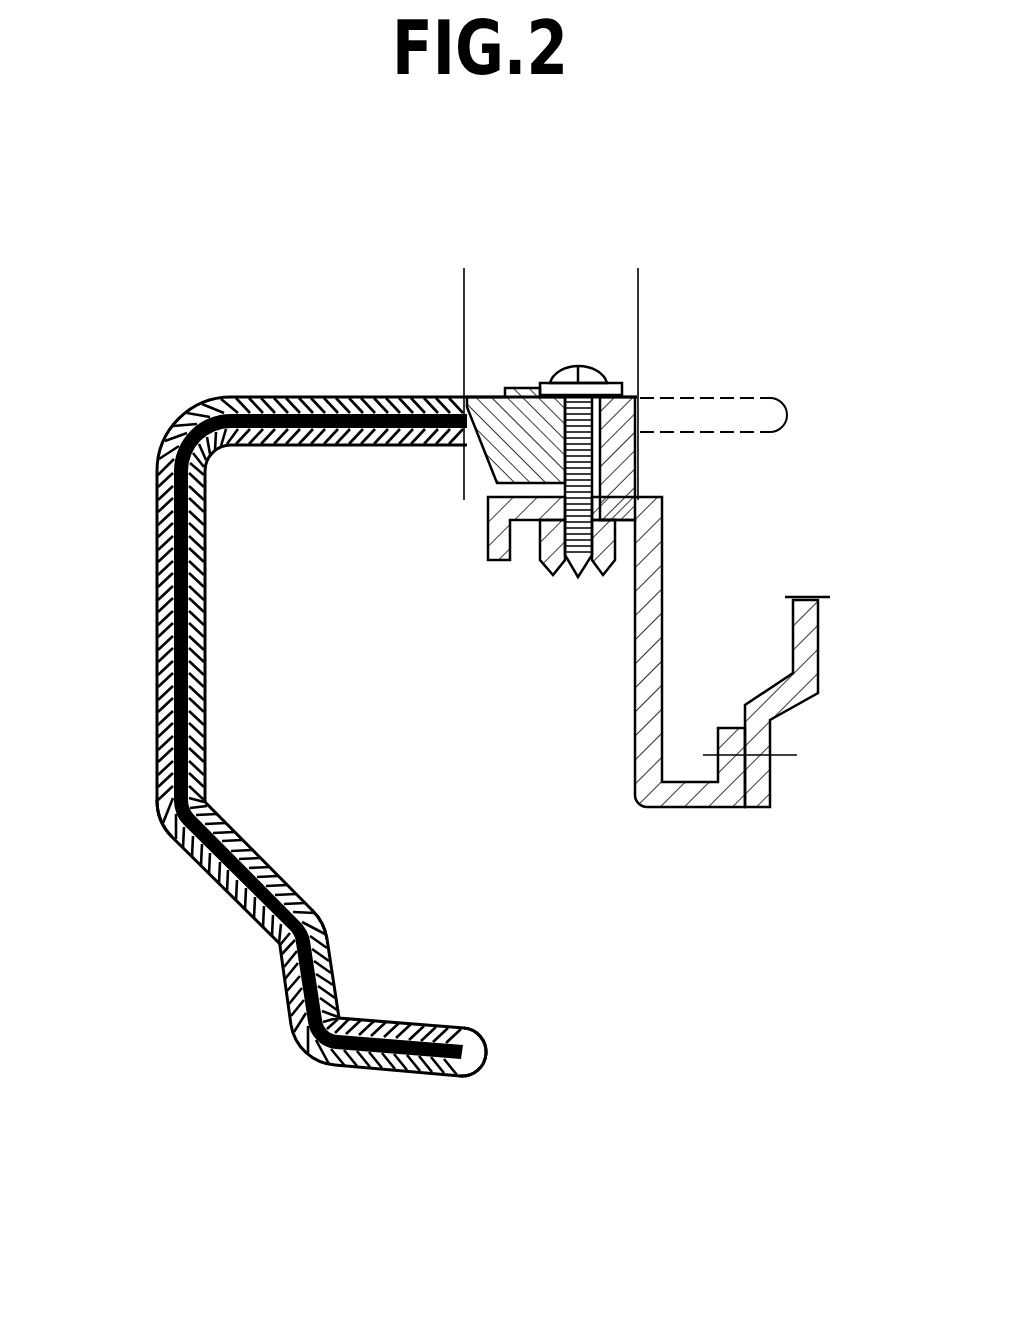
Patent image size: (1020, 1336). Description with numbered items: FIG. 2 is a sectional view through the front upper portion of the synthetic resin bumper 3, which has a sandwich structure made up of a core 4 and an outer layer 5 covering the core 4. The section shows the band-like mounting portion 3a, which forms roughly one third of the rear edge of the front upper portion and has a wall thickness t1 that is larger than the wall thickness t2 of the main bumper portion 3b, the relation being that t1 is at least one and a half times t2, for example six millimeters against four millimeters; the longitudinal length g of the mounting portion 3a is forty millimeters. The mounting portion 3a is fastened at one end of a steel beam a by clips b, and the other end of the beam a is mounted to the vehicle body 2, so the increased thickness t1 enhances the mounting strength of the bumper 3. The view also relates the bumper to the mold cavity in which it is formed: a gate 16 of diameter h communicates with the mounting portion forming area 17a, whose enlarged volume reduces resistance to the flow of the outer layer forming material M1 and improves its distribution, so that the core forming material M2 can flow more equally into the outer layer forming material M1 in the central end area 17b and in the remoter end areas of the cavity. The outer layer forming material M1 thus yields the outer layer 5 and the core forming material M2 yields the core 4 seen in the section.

The bumper 3 is at (414, 696).
The mounting portion 3a is at (645, 450).
The main bumper portion 3b is at (207, 712).
The core 4 is at (182, 688).
The outer layer 5 is at (160, 605).
The outer layer forming material M1 is at (187, 855).
The core forming material M2 is at (262, 872).
The mounting portion forming area 17a is at (640, 413).
The central end area 17b is at (437, 1075).
The gate 16 is at (762, 432).
The vehicle body 2 is at (807, 635).
The steel beam a is at (640, 672).
The clip b is at (588, 372).
The longitudinal length g is at (636, 283).
The gate diameter h is at (688, 470).
The wall thickness of mounting portion t1 is at (407, 340).
The wall thickness of main bumper portion t2 is at (303, 490).